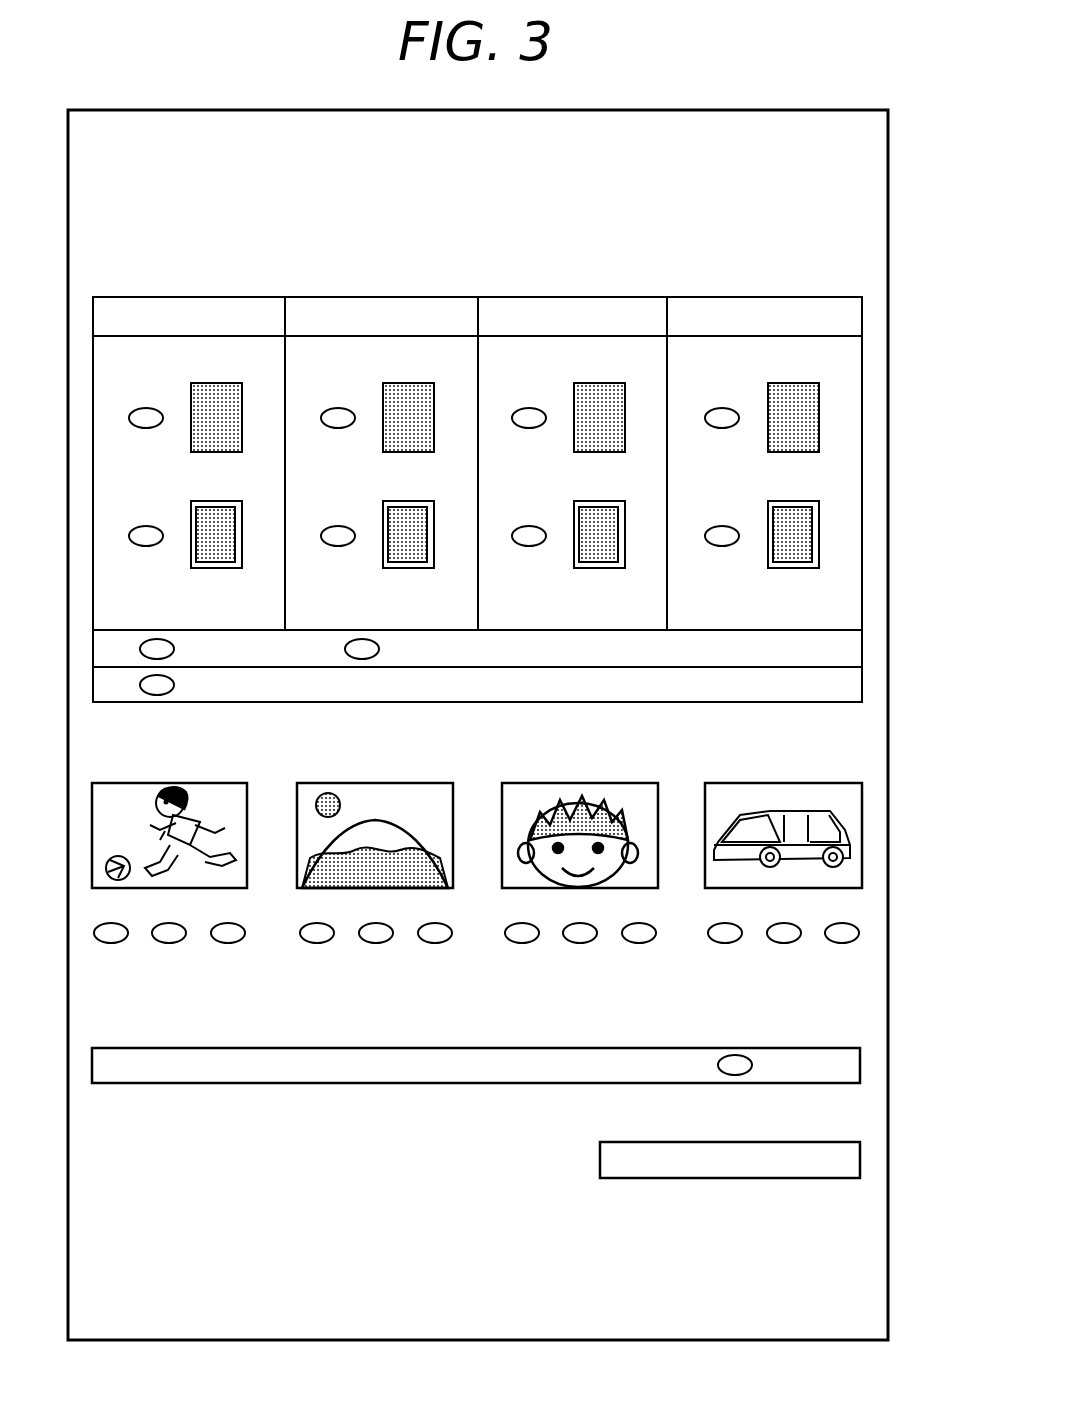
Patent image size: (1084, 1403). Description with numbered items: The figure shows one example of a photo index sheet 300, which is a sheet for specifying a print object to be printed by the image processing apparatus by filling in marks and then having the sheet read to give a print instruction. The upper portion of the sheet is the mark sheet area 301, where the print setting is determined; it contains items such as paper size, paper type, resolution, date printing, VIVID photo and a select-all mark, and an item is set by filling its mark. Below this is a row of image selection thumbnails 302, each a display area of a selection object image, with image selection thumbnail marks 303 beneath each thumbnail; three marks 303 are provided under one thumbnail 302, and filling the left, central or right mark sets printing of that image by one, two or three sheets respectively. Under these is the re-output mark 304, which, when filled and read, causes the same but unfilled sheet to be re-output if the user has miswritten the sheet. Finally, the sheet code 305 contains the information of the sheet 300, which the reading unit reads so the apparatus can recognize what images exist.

The photo index sheet 300 is at (717, 82).
The mark sheet area 301 is at (862, 375).
The image selection thumbnail 302 is at (862, 820).
The image selection thumbnail mark 303 is at (859, 933).
The re-output mark 304 is at (860, 1061).
The sheet code 305 is at (860, 1156).